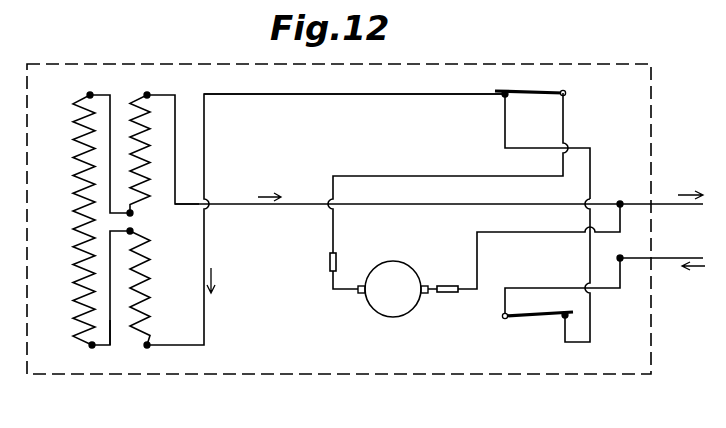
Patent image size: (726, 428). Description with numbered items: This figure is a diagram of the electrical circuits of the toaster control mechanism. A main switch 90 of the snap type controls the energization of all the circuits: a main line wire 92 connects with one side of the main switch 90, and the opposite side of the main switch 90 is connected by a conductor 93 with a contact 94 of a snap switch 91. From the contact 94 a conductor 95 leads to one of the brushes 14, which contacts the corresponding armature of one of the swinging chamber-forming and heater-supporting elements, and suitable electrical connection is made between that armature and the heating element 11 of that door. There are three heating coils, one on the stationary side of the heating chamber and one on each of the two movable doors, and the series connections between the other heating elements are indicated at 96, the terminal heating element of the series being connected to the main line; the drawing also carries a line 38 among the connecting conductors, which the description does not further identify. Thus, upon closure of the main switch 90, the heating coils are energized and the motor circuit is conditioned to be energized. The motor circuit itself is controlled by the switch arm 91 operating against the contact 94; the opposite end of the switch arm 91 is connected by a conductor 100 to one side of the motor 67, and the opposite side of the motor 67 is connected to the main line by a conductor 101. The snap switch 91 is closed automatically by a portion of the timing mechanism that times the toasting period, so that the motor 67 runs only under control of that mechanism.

The heating element 11 is at (75, 233).
The brush 14 is at (147, 348).
The series connection 96 is at (113, 330).
The supply conductor 38 is at (234, 203).
The conductor 95 is at (360, 95).
The snap switch 91 is at (527, 90).
The contact 94 is at (503, 97).
The conductor 93 is at (590, 266).
The conductor 100 is at (338, 237).
The motor 67 is at (383, 318).
The conductor 101 is at (477, 252).
The main line wire 92 is at (668, 260).
The main switch 90 is at (525, 319).